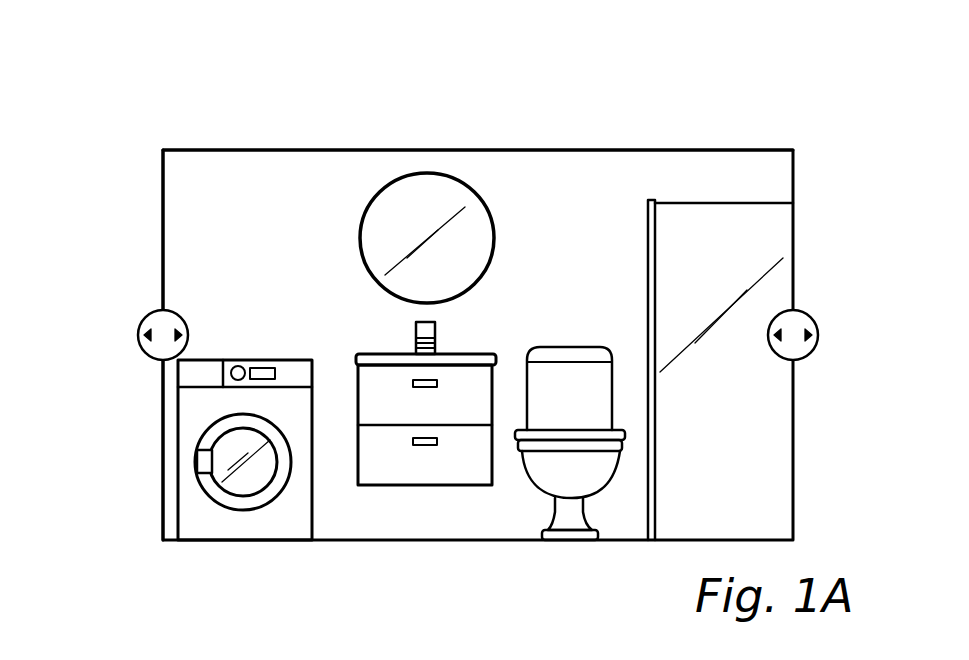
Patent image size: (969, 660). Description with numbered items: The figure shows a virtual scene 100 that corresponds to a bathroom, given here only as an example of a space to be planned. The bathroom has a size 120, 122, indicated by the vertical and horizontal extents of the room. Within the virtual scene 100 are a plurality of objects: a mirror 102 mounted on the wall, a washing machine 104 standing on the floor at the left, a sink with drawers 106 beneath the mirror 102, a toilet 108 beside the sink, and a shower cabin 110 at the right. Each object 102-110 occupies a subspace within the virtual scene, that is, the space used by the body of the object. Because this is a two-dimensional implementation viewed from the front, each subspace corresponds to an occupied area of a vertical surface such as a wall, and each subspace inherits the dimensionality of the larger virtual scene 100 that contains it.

The virtual scene 100 is at (138, 113).
The mirror 102 is at (423, 190).
The washing machine 104 is at (197, 518).
The sink with drawers 106 is at (389, 468).
The toilet 108 is at (570, 522).
The shower cabin 110 is at (770, 471).
The size 120 is at (118, 150).
The size 122 is at (790, 110).